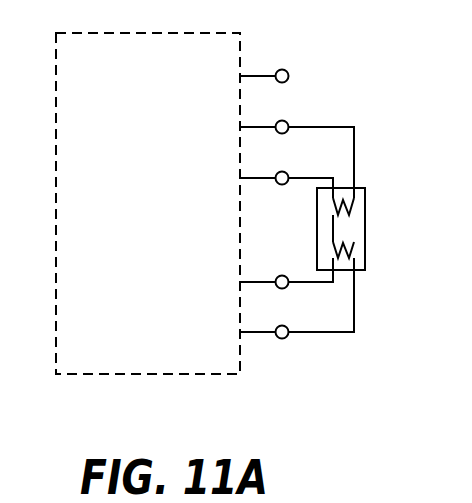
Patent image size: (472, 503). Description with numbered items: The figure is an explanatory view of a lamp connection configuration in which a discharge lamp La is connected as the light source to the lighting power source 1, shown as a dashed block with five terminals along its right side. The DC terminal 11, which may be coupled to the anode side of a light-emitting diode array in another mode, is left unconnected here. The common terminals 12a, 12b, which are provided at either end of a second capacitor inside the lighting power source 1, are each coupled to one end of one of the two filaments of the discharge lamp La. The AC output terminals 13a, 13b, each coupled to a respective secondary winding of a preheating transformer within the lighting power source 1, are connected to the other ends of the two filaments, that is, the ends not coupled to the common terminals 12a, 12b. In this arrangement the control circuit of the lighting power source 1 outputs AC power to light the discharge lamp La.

The lighting power source 1 is at (134, 374).
The DC terminal 11 is at (279, 69).
The common terminal 12a is at (279, 120).
The common terminal 12b is at (285, 289).
The AC output terminal 13a is at (282, 185).
The AC output terminal 13b is at (285, 339).
The discharge lamp La is at (366, 238).